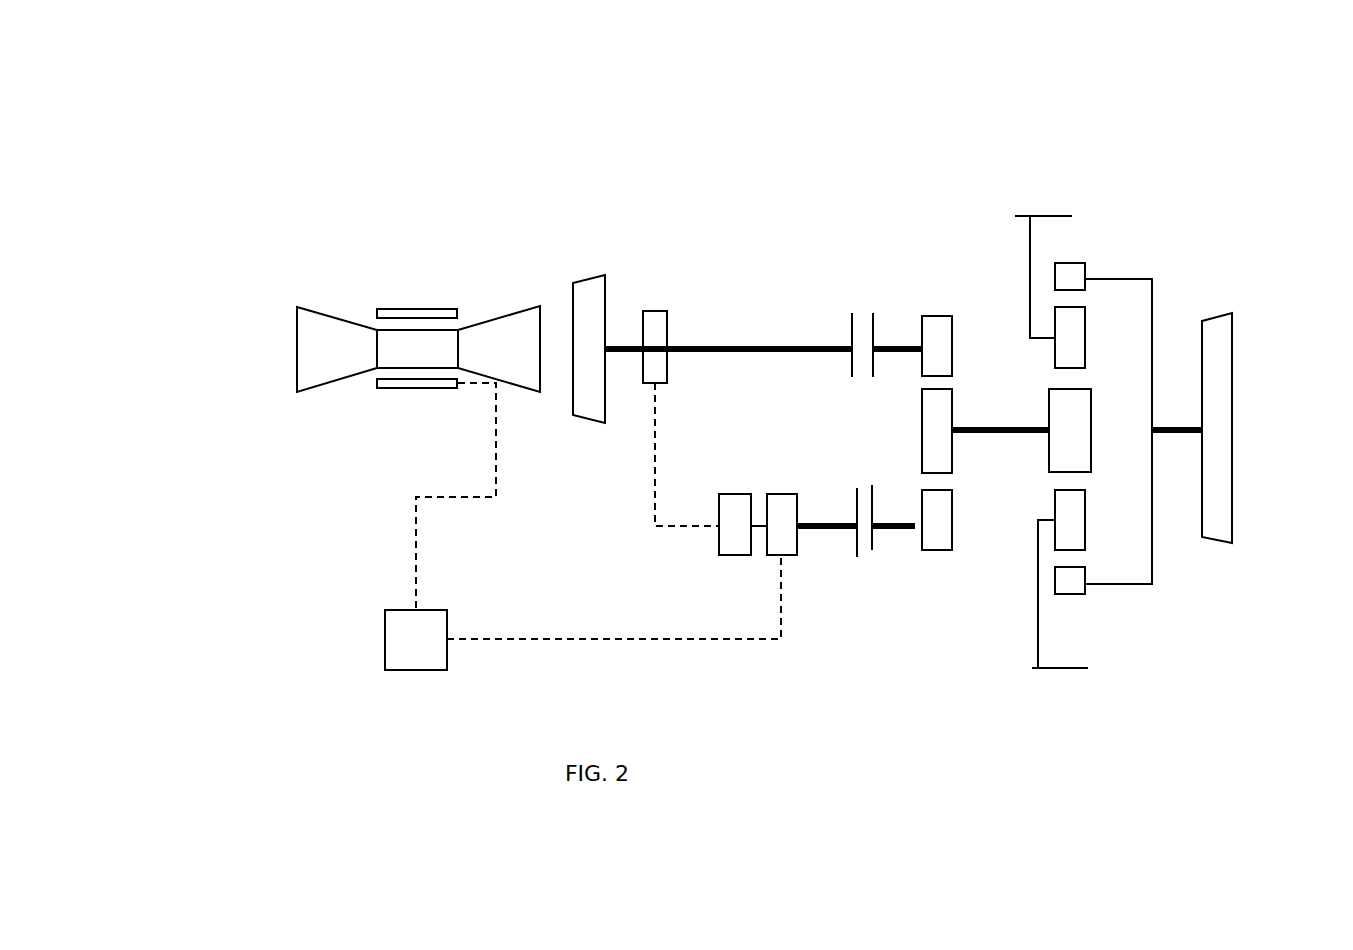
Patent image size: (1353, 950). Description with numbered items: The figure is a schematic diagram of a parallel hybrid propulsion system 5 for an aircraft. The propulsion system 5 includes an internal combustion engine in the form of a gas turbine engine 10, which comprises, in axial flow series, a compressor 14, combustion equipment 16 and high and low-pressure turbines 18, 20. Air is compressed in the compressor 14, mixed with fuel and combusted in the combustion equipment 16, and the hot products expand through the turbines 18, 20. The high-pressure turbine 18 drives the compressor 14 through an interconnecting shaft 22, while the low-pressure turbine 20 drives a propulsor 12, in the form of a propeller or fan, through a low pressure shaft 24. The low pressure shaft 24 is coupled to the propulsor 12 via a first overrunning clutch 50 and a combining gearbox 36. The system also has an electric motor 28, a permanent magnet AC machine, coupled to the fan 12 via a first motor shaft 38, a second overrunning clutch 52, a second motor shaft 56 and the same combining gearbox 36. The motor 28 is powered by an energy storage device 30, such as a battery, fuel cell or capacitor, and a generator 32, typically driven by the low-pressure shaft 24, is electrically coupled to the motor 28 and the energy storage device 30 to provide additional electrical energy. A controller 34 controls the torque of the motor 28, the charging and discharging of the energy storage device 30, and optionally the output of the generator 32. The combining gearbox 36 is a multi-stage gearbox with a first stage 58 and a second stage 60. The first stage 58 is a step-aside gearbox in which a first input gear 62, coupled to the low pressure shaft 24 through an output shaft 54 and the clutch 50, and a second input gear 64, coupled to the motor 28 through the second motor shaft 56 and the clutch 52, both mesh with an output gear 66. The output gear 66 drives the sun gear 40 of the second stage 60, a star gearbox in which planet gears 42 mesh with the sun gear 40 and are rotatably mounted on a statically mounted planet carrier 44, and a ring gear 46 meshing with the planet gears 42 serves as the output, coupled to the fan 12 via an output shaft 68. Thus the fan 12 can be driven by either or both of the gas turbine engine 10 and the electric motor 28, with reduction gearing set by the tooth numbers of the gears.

The propulsion system 5 is at (272, 272).
The gas turbine engine 10 is at (355, 440).
The propulsor 12 is at (1215, 318).
The compressor 14 is at (338, 315).
The combustion equipment 16 is at (418, 307).
The high-pressure turbine 18 is at (500, 315).
The low-pressure turbine 20 is at (590, 275).
The interconnecting shaft 22 is at (437, 333).
The low pressure shaft 24 is at (697, 343).
The electric motor 28 is at (782, 555).
The energy storage device 30 is at (735, 555).
The generator 32 is at (655, 385).
The controller 34 is at (383, 639).
The combining gearbox 36 is at (1142, 688).
The first motor shaft 38 is at (825, 518).
The sun gear 40 is at (1092, 430).
The planet gears 42 is at (1087, 338).
The planet carrier 44 is at (1030, 215).
The ring gear 46 is at (1070, 593).
The overrunning clutch 50 is at (873, 313).
The overrunning clutch 52 is at (857, 557).
The output shaft 54 is at (893, 343).
The second motor shaft 56 is at (900, 520).
The first stage 58 is at (941, 604).
The second stage 60 is at (1125, 262).
The first input gear 62 is at (953, 345).
The second input gear 64 is at (952, 520).
The output gear 66 is at (952, 455).
The output shaft 68 is at (1152, 348).